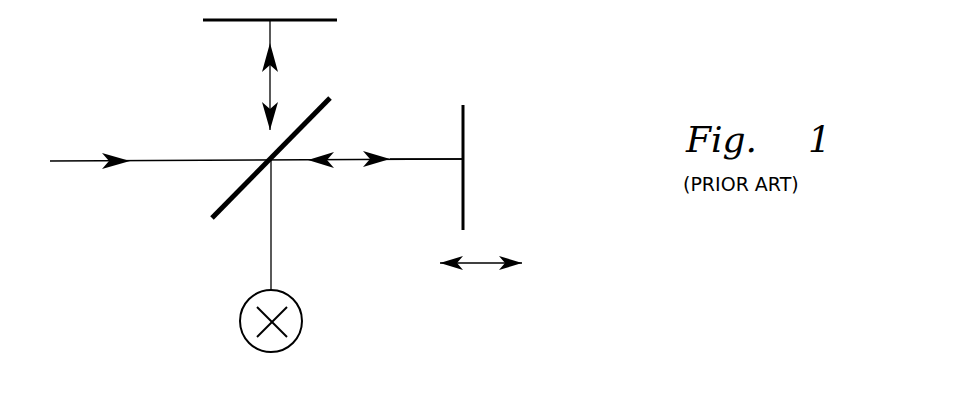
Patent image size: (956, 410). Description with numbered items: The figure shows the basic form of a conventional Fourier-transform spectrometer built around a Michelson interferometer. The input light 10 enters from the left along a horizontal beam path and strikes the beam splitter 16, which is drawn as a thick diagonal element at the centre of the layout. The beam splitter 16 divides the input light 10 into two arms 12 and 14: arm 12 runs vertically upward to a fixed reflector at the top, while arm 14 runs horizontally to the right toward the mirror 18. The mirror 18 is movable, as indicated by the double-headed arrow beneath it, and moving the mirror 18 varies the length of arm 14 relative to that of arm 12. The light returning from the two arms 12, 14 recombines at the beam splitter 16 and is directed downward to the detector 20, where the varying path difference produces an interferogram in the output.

The input light 10 is at (70, 161).
The arm 12 is at (270, 34).
The arm 14 is at (431, 158).
The beam splitter 16 is at (210, 218).
The mirror 18 is at (490, 150).
The detector 20 is at (303, 320).